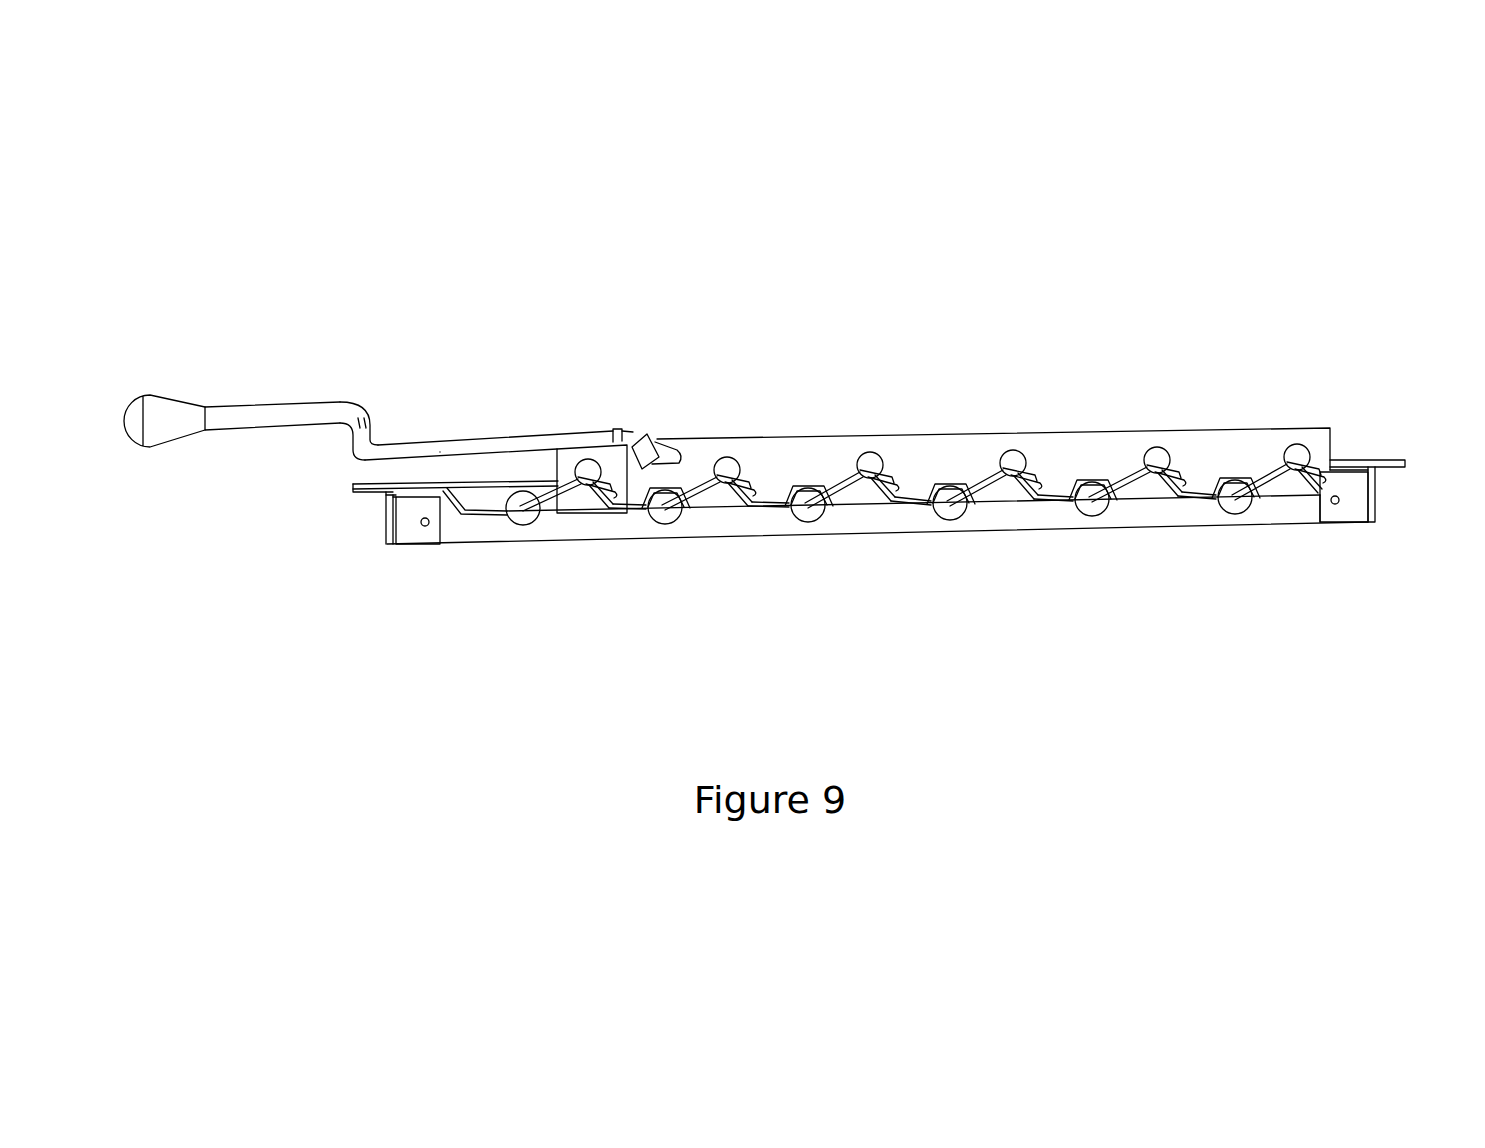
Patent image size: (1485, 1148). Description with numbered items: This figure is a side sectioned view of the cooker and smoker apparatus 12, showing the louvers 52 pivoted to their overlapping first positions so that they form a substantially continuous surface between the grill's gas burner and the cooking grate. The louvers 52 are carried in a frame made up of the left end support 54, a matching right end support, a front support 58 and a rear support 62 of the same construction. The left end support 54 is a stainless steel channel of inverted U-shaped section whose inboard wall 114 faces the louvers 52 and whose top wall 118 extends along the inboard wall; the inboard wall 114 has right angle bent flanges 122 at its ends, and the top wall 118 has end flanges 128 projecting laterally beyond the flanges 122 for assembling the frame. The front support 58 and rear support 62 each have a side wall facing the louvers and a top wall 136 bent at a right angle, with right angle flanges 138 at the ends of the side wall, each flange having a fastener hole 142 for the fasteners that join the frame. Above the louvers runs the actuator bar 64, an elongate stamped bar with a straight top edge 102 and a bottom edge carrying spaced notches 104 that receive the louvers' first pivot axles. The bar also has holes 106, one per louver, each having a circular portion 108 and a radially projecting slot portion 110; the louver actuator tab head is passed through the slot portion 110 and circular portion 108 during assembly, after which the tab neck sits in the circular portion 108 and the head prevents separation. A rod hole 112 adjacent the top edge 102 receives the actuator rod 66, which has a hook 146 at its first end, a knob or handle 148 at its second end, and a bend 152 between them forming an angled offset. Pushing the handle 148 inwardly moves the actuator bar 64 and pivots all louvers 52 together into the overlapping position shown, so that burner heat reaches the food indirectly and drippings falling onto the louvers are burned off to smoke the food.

The cooker and smoker apparatus 12 is at (405, 278).
The louvers 52 is at (493, 512).
The left end support 54 is at (560, 530).
The front support 58 is at (386, 520).
The rear support 62 is at (1392, 473).
The actuator bar 64 is at (809, 455).
The actuator rod 66 is at (292, 405).
The top edge 102 is at (1089, 430).
The notches 104 is at (692, 512).
The holes 106 is at (573, 466).
The circular portion 108 is at (603, 477).
The slot portion 110 is at (621, 487).
The rod hole 112 is at (679, 448).
The inboard wall 114 is at (480, 493).
The top wall 118 is at (493, 483).
The right angle bent flanges 122 is at (382, 520).
The end flanges 128 is at (372, 486).
The top wall 136 is at (376, 499).
The right angle flanges 138 is at (412, 535).
The fastener hole 142 is at (430, 523).
The hook 146 is at (614, 436).
The knob or handle 148 is at (172, 410).
The bend 152 is at (348, 410).